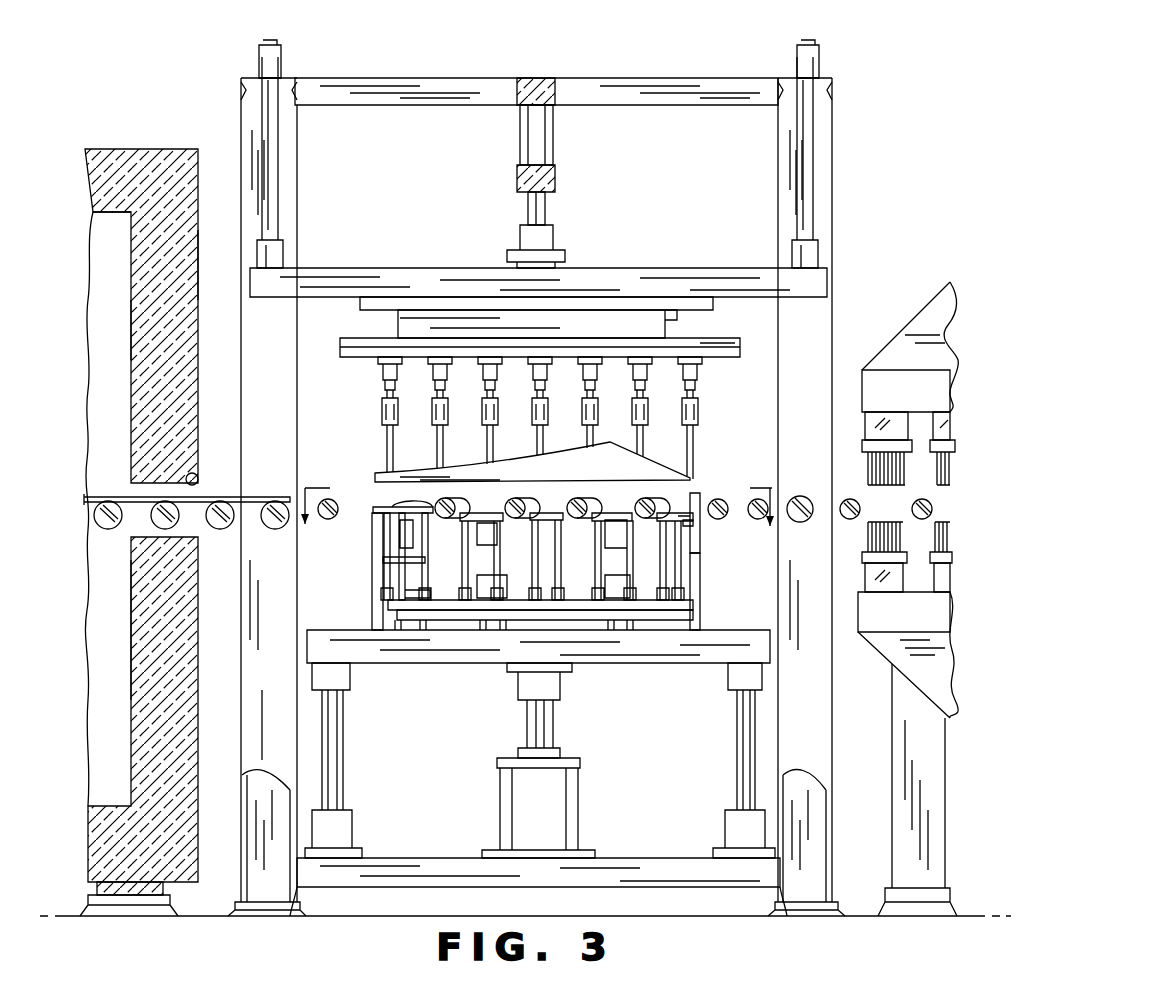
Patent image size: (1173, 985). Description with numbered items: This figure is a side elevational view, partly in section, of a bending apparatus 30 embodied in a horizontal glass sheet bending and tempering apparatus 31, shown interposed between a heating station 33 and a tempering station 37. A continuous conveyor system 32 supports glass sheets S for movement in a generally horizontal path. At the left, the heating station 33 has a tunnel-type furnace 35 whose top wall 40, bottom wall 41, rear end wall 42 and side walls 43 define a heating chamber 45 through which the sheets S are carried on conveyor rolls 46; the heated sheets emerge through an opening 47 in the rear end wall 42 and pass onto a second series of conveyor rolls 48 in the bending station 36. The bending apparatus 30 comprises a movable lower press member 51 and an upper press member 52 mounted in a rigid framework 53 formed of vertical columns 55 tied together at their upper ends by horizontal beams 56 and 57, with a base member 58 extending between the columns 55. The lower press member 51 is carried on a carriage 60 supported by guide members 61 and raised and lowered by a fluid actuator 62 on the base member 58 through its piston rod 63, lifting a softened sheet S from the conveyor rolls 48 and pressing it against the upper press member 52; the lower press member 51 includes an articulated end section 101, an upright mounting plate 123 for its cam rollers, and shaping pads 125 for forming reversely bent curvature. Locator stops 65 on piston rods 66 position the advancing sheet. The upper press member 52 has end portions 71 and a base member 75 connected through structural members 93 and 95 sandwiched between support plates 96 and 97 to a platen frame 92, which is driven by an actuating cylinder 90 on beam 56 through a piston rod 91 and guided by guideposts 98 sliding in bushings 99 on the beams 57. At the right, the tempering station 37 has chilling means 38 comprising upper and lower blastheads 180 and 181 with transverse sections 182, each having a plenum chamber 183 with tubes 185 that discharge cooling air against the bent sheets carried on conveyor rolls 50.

The bending apparatus 30 is at (618, 615).
The horizontal glass sheet bending and tempering apparatus 31 is at (531, 462).
The conveyor system 32 is at (252, 545).
The heating station 33 is at (173, 475).
The furnace 35 is at (150, 146).
The bending station 36 is at (538, 243).
The tempering station 37 is at (891, 535).
The chilling means 38 is at (878, 345).
The top wall 40 is at (98, 182).
The bottom wall 41 is at (97, 845).
The rear end wall 42 is at (198, 272).
The side walls 43 is at (96, 341).
The heating chamber 45 is at (103, 600).
The conveyor rolls 46 is at (182, 528).
The opening 47 is at (199, 478).
The conveyor rolls 48 is at (546, 498).
The conveyor rolls 50 is at (817, 520).
The lower press member 51 is at (367, 522).
The upper press member 52 is at (375, 473).
The framework 53 is at (433, 76).
The columns 55 is at (262, 782).
The horizontal beam 56 is at (620, 88).
The horizontal beam 57 is at (300, 78).
The base member 58 is at (630, 872).
The carriage 60 is at (640, 668).
The guide members 61 is at (343, 765).
The fluid actuator 62 is at (517, 805).
The piston rod 63 is at (533, 722).
The locator stops 65 is at (696, 500).
The piston rod 66 is at (698, 522).
The end portions 71 is at (655, 448).
The base member 75 is at (340, 352).
The actuating cylinder 90 is at (555, 148).
The piston rod 91 is at (527, 206).
The platen frame 92 is at (616, 272).
The structural member 93 is at (438, 318).
The structural member 95 is at (668, 322).
The support plate 96 is at (694, 300).
The support plate 97 is at (742, 350).
The guideposts 98 is at (278, 190).
The bushings 99 is at (283, 58).
The end section 101 is at (522, 618).
The mounting plate 123 is at (700, 608).
The shaping pads 125 is at (482, 506).
The upper blasthead 180 is at (920, 330).
The lower blasthead 181 is at (892, 652).
The sections 182 is at (868, 432).
The plenum chamber 183 is at (940, 445).
The tubes 185 is at (948, 485).
The glass sheets S is at (255, 497).